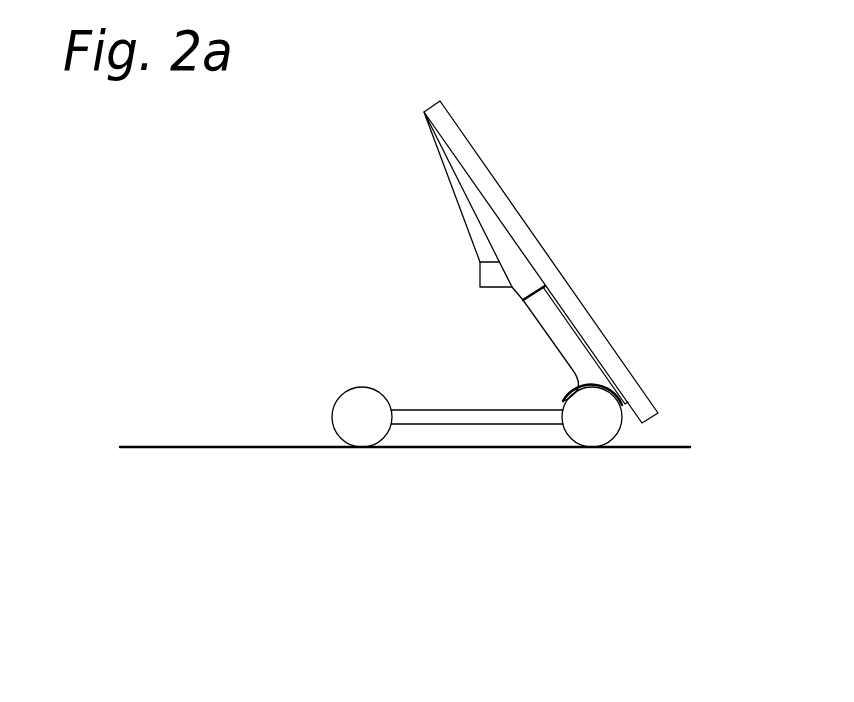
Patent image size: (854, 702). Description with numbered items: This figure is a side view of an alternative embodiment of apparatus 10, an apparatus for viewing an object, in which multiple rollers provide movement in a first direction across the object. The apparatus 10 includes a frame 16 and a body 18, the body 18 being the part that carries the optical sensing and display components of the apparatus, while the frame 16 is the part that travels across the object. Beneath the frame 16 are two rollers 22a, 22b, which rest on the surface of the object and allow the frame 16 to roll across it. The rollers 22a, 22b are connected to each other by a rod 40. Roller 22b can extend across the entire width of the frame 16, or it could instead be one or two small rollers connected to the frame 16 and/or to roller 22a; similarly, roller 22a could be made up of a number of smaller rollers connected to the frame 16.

The apparatus 10 is at (429, 306).
The frame 16 is at (446, 338).
The body 18 is at (618, 350).
The rod 40 is at (490, 412).
The roller 22a is at (602, 425).
The roller 22b is at (362, 428).